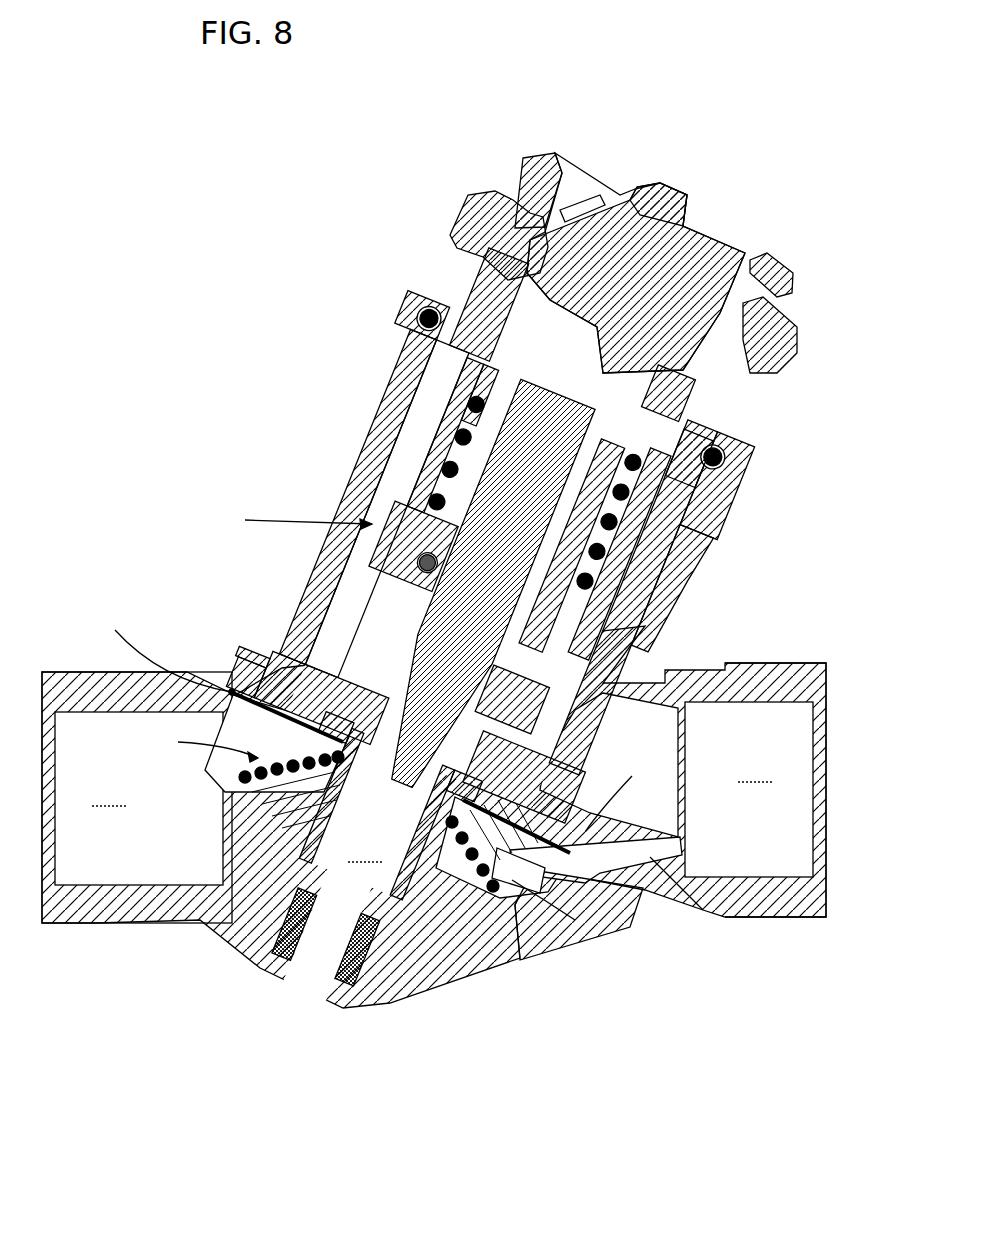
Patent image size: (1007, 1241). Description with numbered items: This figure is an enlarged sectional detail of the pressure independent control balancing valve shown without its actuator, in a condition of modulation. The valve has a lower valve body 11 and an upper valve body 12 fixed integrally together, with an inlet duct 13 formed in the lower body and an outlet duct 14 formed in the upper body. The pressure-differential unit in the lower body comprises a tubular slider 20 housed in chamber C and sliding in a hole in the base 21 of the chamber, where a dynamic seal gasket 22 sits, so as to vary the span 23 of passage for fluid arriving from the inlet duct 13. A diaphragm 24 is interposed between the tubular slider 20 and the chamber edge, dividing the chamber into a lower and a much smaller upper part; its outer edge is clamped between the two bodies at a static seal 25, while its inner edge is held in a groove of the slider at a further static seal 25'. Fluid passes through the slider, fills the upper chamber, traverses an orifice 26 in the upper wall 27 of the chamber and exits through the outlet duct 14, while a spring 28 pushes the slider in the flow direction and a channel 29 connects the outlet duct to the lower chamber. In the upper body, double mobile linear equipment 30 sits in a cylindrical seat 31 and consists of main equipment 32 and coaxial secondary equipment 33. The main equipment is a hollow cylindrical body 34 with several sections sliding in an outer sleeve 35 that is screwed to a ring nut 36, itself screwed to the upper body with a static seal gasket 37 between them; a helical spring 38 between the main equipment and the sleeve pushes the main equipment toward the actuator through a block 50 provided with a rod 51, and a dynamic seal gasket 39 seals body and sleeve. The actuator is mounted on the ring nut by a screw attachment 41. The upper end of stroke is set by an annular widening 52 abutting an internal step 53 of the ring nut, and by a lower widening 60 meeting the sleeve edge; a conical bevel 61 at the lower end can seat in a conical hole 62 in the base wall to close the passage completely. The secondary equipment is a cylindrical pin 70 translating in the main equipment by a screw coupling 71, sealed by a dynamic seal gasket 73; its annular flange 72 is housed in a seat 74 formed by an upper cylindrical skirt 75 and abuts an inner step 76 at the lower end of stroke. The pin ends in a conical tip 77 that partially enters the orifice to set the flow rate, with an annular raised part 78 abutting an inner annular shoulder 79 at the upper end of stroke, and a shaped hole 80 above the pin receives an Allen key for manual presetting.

The lower valve body 11 is at (492, 985).
The upper valve body 12 is at (350, 450).
The inlet duct 13 is at (95, 865).
The outlet duct 14 is at (790, 855).
The tubular slider 20 is at (520, 958).
The base of the chamber 21 is at (205, 860).
The dynamic seal gasket 22 is at (405, 892).
The span of passage 23 is at (308, 905).
The diaphragm 24 is at (250, 700).
The static seal 25 is at (596, 830).
The further static seal 25' is at (378, 811).
The orifice 26 is at (300, 700).
The upper wall of the chamber 27 is at (255, 680).
The spring 28 is at (150, 860).
The channel 29 is at (652, 862).
The double mobile linear equipment 30 is at (432, 460).
The cylindrical seat 31 is at (383, 482).
The main equipment 32 is at (662, 508).
The secondary equipment 33 is at (612, 580).
The hollow cylindrical body 34 is at (456, 470).
The outer sleeve 35 is at (447, 488).
The ring nut 36 is at (692, 425).
The static seal gasket 37 is at (428, 340).
The helical spring 38 is at (652, 540).
The dynamic seal gasket 39 is at (562, 582).
The screw attachment 41 is at (456, 210).
The block 50 is at (598, 300).
The rod 51 is at (670, 215).
The annular widening 52 is at (712, 465).
The internal step 53 is at (700, 402).
The widening 60 is at (545, 705).
The conical bevel 61 is at (532, 712).
The conical hole 62 is at (522, 820).
The cylindrical pin 70 is at (732, 270).
The screw coupling 71 is at (642, 390).
The annular flange 72 is at (560, 330).
The dynamic seal gasket 73 is at (582, 597).
The seat 74 is at (602, 368).
The upper cylindrical skirt 75 is at (748, 342).
The inner step 76 is at (462, 330).
The conical tip 77 is at (318, 672).
The annular raised part 78 is at (372, 612).
The inner annular shoulder 79 is at (500, 742).
The shaped hole 80 is at (628, 300).